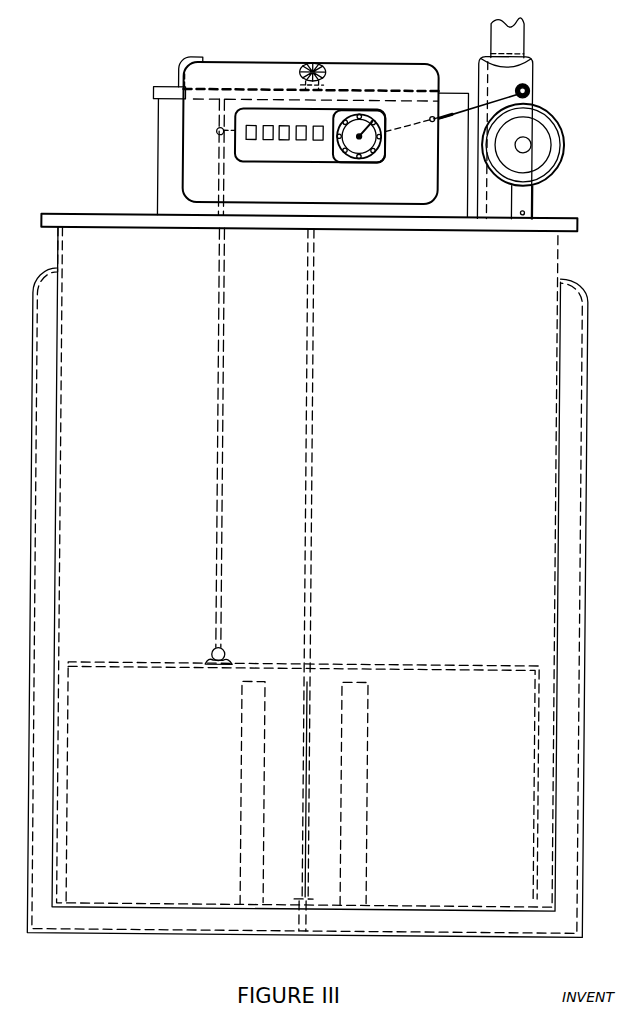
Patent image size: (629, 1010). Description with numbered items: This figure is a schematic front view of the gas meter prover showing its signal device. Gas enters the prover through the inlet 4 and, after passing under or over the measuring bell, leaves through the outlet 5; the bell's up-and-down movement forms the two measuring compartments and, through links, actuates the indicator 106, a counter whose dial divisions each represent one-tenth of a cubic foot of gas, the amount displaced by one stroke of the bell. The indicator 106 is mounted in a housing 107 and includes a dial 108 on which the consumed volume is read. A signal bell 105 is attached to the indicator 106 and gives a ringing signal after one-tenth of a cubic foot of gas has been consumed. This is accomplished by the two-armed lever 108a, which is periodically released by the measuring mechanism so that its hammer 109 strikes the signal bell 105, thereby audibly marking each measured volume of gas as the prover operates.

The inlet 4 is at (525, 33).
The outlet 5 is at (533, 73).
The signal bell 105 is at (566, 142).
The indicator 106 is at (344, 164).
The control housing 107 is at (157, 147).
The dial gauge 108 is at (364, 163).
The two-armed lever 108a is at (476, 96).
The hammer 109 is at (530, 90).